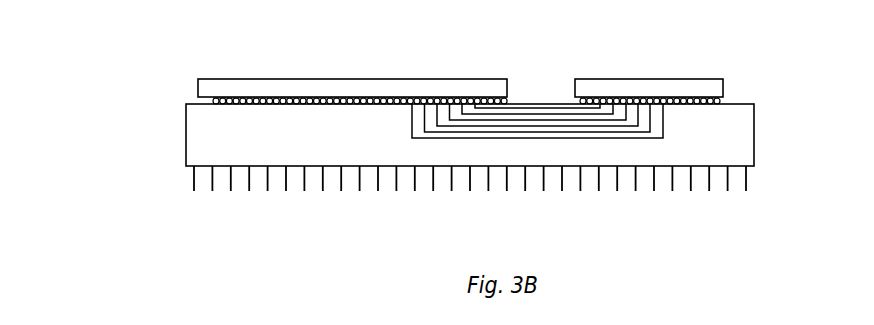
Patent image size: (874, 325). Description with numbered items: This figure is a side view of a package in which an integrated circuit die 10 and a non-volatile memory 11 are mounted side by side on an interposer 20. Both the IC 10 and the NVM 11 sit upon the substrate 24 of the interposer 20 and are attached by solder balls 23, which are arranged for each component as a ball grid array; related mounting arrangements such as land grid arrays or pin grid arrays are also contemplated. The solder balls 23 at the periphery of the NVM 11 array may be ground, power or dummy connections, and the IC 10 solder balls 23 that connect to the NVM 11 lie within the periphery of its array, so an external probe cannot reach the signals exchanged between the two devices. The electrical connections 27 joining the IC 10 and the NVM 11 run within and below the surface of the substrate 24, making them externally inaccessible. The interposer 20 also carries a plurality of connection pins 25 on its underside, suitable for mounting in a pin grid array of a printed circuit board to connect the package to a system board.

The integrated circuit (IC) die 10 is at (350, 78).
The non-volatile memory (NVM) 11 is at (632, 78).
The interposer 20 is at (150, 132).
The solder balls 23 is at (723, 100).
The substrate 24 is at (755, 137).
The connection pins 25 is at (755, 180).
The electrical connections 27 is at (523, 103).